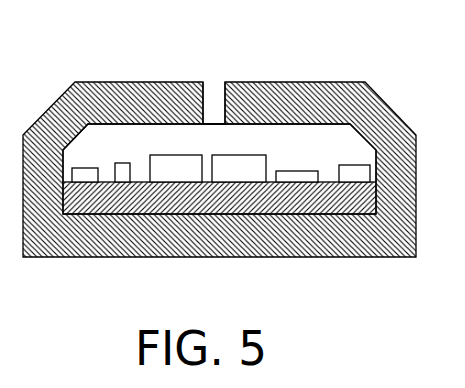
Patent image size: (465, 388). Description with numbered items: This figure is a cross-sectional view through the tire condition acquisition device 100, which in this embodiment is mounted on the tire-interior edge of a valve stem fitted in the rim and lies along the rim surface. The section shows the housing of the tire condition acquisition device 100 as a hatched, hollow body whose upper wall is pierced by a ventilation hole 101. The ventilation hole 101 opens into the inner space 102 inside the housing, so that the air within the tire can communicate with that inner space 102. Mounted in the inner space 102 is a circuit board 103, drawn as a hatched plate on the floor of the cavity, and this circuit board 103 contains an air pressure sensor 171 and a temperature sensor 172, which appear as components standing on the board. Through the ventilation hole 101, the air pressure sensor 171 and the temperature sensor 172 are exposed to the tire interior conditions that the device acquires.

The tire condition acquisition device 100 is at (82, 82).
The ventilation hole 101 is at (213, 82).
The inner space 102 is at (274, 135).
The circuit board 103 is at (269, 235).
The air pressure sensor 171 is at (180, 155).
The temperature sensor 172 is at (240, 155).